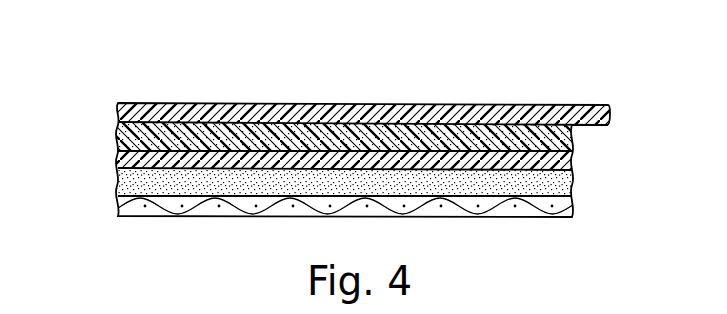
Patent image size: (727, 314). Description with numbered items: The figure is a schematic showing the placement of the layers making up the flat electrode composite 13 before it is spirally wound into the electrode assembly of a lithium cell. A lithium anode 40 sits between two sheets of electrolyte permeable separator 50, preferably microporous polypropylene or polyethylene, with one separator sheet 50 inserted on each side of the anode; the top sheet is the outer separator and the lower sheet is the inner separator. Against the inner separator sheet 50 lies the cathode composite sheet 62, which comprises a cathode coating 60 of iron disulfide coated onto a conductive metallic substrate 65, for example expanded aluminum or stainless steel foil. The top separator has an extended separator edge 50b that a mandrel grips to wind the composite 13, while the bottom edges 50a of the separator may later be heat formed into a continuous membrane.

The flat electrode composite 13 is at (170, 76).
The lithium anode 40 is at (568, 133).
The separator 50 is at (552, 107).
The bottom edges of separator 50a is at (117, 160).
The extended separator edge 50b is at (609, 113).
The cathode coating 60 is at (568, 187).
The cathode composite sheet 62 is at (110, 168).
The substrate 65 is at (498, 212).